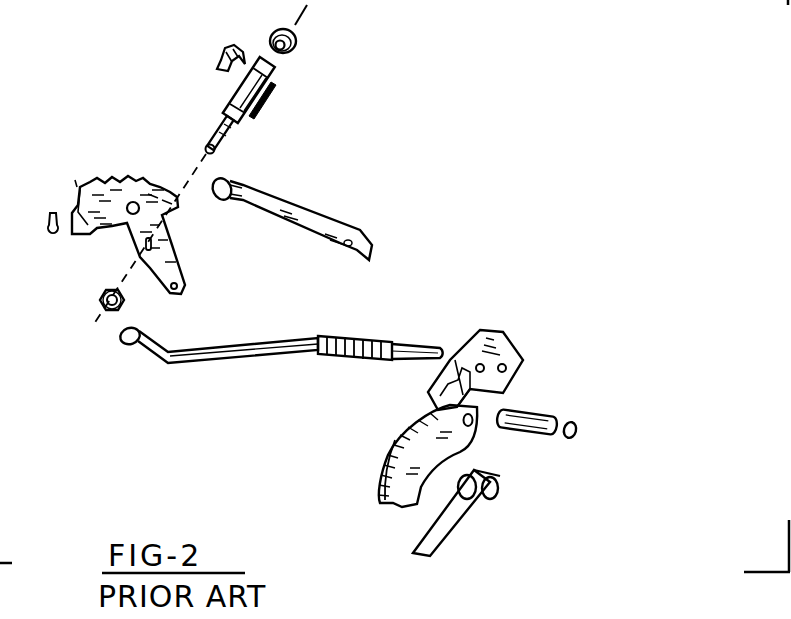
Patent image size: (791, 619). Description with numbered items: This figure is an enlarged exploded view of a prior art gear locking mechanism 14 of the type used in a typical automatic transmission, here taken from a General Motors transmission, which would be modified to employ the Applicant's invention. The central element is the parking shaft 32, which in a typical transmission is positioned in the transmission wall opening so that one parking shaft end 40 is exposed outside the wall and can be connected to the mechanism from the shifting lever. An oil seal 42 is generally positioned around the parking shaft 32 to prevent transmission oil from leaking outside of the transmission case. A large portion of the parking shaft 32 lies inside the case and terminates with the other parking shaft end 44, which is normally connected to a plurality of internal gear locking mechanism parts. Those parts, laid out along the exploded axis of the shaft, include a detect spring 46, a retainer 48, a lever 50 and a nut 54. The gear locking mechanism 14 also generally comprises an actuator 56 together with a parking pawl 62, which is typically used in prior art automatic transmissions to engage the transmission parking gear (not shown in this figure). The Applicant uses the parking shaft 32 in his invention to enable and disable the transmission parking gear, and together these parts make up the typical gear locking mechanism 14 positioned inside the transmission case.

The gear locking mechanism 14 is at (405, 168).
The parking shaft 32 is at (235, 100).
The parking shaft end 40 is at (273, 67).
The oil seal 42 is at (297, 31).
The parking shaft end 44 is at (228, 137).
The detect spring 46 is at (317, 223).
The retainer 48 is at (226, 41).
The lever 50 is at (177, 248).
The nut 54 is at (97, 293).
The actuator 56 is at (222, 353).
The parking pawl 62 is at (378, 480).